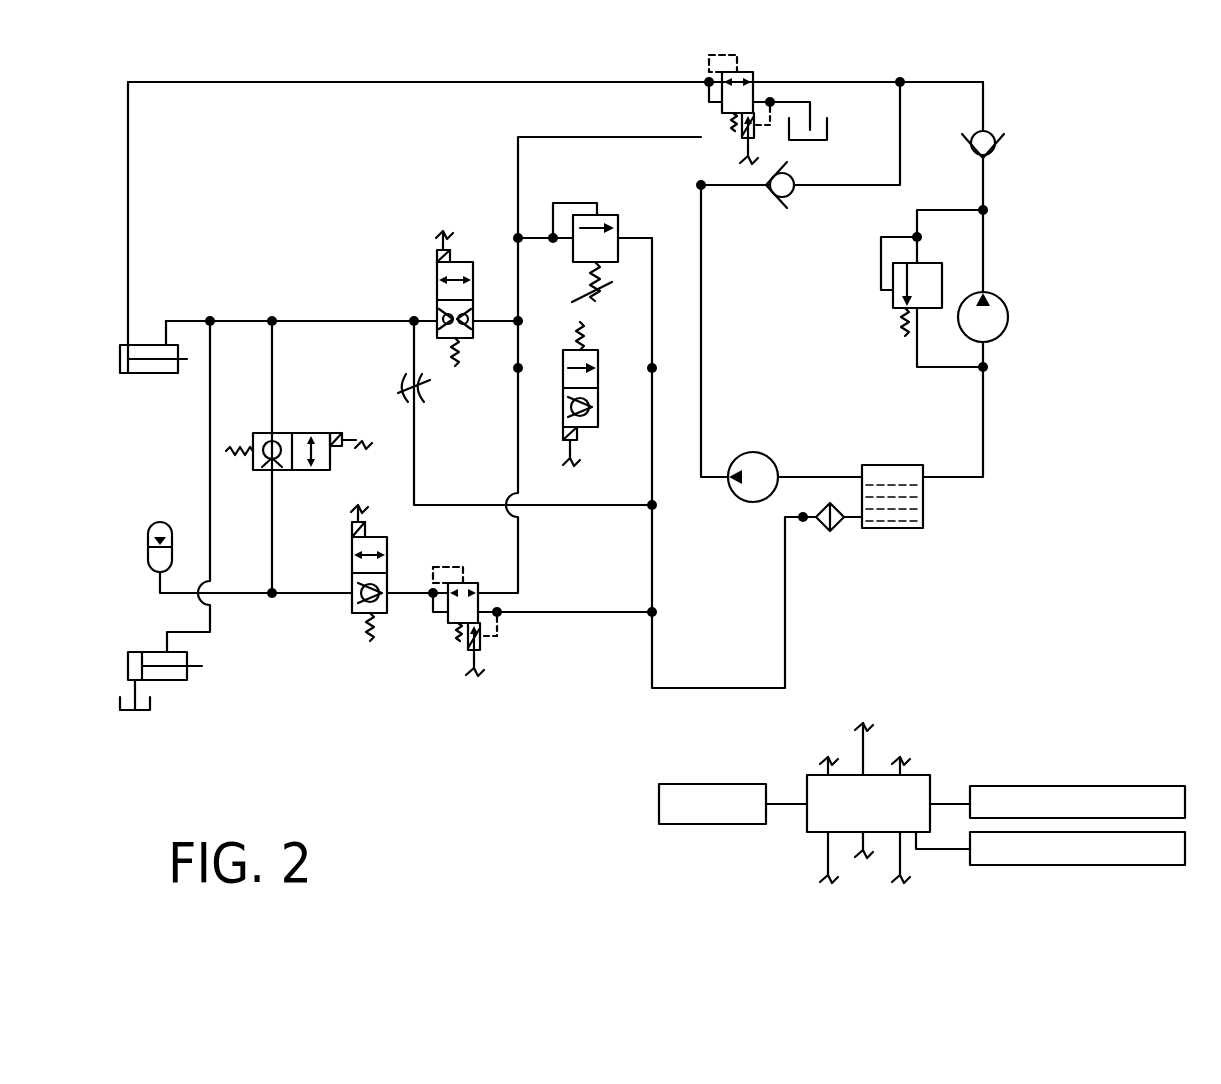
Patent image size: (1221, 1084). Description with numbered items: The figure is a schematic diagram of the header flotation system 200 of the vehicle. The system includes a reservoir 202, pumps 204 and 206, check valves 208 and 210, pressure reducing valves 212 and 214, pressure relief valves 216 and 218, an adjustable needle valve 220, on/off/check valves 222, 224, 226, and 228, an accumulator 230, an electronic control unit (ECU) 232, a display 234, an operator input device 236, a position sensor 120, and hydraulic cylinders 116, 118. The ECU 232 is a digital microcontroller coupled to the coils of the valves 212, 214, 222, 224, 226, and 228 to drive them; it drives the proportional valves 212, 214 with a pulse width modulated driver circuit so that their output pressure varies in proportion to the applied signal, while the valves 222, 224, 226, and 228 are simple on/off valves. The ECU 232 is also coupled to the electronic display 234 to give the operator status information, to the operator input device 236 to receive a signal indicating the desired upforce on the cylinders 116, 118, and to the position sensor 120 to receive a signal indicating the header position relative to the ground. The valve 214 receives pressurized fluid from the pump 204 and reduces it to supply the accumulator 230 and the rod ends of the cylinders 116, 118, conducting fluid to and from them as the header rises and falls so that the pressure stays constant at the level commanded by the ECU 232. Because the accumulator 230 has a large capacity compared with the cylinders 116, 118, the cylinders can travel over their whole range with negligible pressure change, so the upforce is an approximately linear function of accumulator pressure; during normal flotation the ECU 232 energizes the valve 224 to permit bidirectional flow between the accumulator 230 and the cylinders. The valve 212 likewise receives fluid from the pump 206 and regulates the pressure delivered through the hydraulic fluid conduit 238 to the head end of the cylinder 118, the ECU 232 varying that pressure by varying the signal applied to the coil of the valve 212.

The header flotation system 200 is at (822, 571).
The hydraulic fluid conduit 238 is at (208, 82).
The pressure reducing valve 212 is at (722, 106).
The reservoir 202 is at (800, 141).
The check valve 208 is at (792, 194).
The check valve 210 is at (991, 133).
The pressure relief valve 216 is at (597, 215).
The pump 206 is at (1008, 322).
The pressure relief valve 218 is at (895, 312).
The on/off/check valve 222 is at (437, 268).
The adjustable needle valve 220 is at (428, 390).
The on/off/check valve 228 is at (600, 378).
The on/off/check valve 224 is at (305, 433).
The hydraulic cylinder 118 is at (146, 373).
The accumulator 230 is at (148, 542).
The on/off/check valve 226 is at (387, 560).
The pressure reducing valve 214 is at (443, 620).
The pump 204 is at (762, 503).
The hydraulic cylinder 116 is at (187, 675).
The position sensor 120 is at (710, 784).
The electronic control unit (ECU) 232 is at (917, 775).
The display 234 is at (1058, 786).
The operator input device 236 is at (1050, 866).